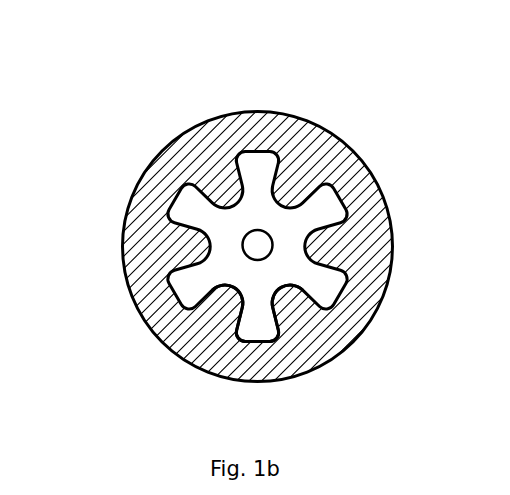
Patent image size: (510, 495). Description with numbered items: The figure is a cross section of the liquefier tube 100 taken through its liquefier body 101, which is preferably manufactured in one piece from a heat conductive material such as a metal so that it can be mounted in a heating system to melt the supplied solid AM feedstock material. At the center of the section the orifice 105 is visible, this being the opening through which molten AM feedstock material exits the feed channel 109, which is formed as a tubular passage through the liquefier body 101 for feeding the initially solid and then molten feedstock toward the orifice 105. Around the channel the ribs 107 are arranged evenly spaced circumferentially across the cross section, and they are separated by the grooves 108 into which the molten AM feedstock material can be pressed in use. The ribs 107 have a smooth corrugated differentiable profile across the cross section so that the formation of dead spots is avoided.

The liquefier tube 100 is at (221, 85).
The liquefier body 101 is at (168, 169).
The orifice 105 is at (250, 240).
The ribs 107 is at (222, 310).
The grooves 108 is at (313, 208).
The feed channel 109 is at (224, 252).